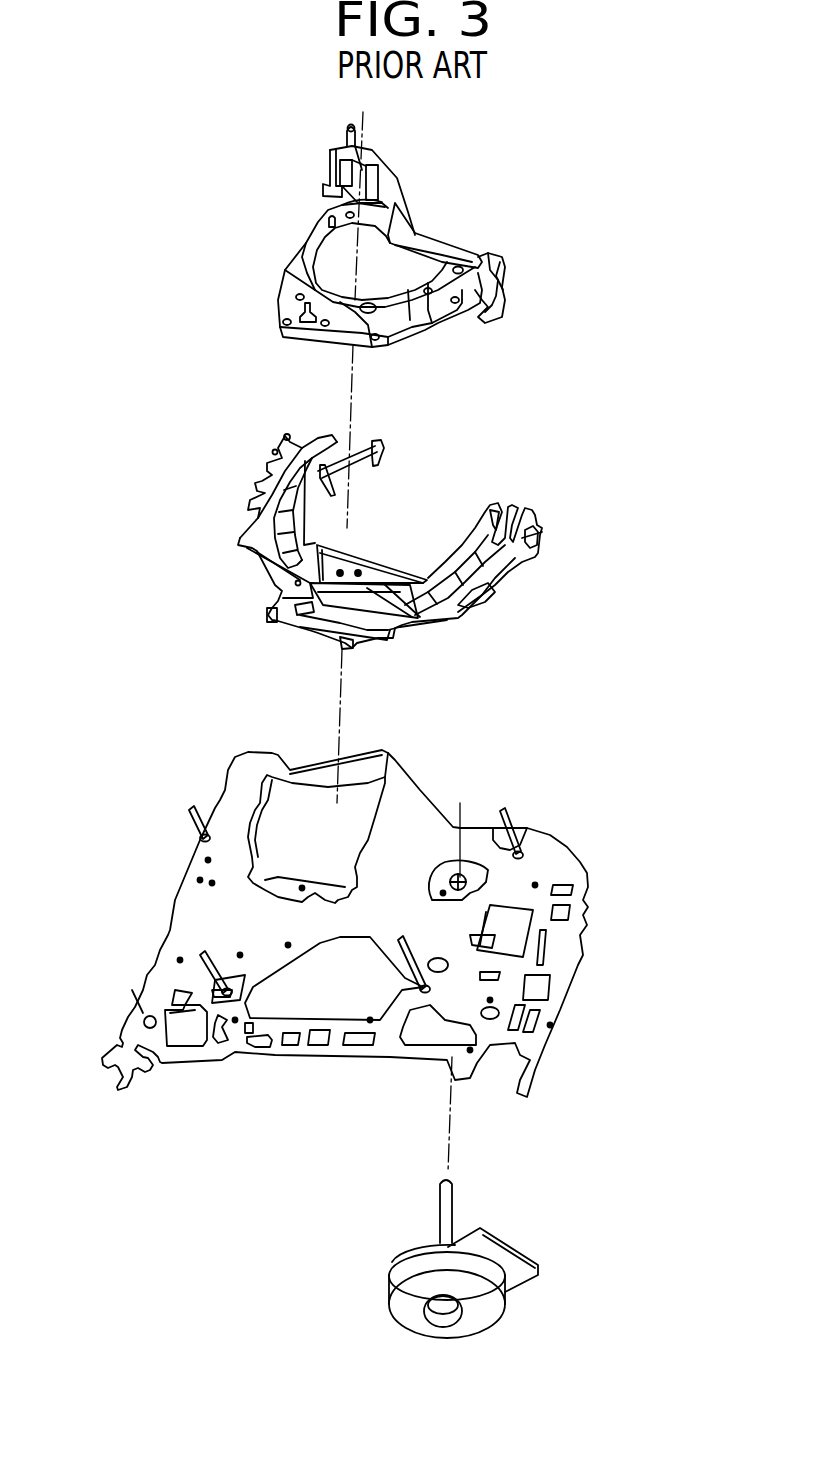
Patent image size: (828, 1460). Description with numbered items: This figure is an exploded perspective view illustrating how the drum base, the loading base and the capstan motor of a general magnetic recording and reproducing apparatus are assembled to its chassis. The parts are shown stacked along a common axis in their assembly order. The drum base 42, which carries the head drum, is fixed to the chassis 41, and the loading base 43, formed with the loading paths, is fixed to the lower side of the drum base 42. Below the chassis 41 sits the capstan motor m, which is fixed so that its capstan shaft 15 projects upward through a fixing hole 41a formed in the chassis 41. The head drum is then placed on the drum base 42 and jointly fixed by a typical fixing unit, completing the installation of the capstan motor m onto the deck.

The drum base 42 is at (462, 244).
The loading base 43 is at (306, 429).
The chassis 41 is at (420, 784).
The fixing hole 41a is at (487, 868).
The capstan shaft 15 is at (458, 1190).
The capstan motor m is at (537, 1253).